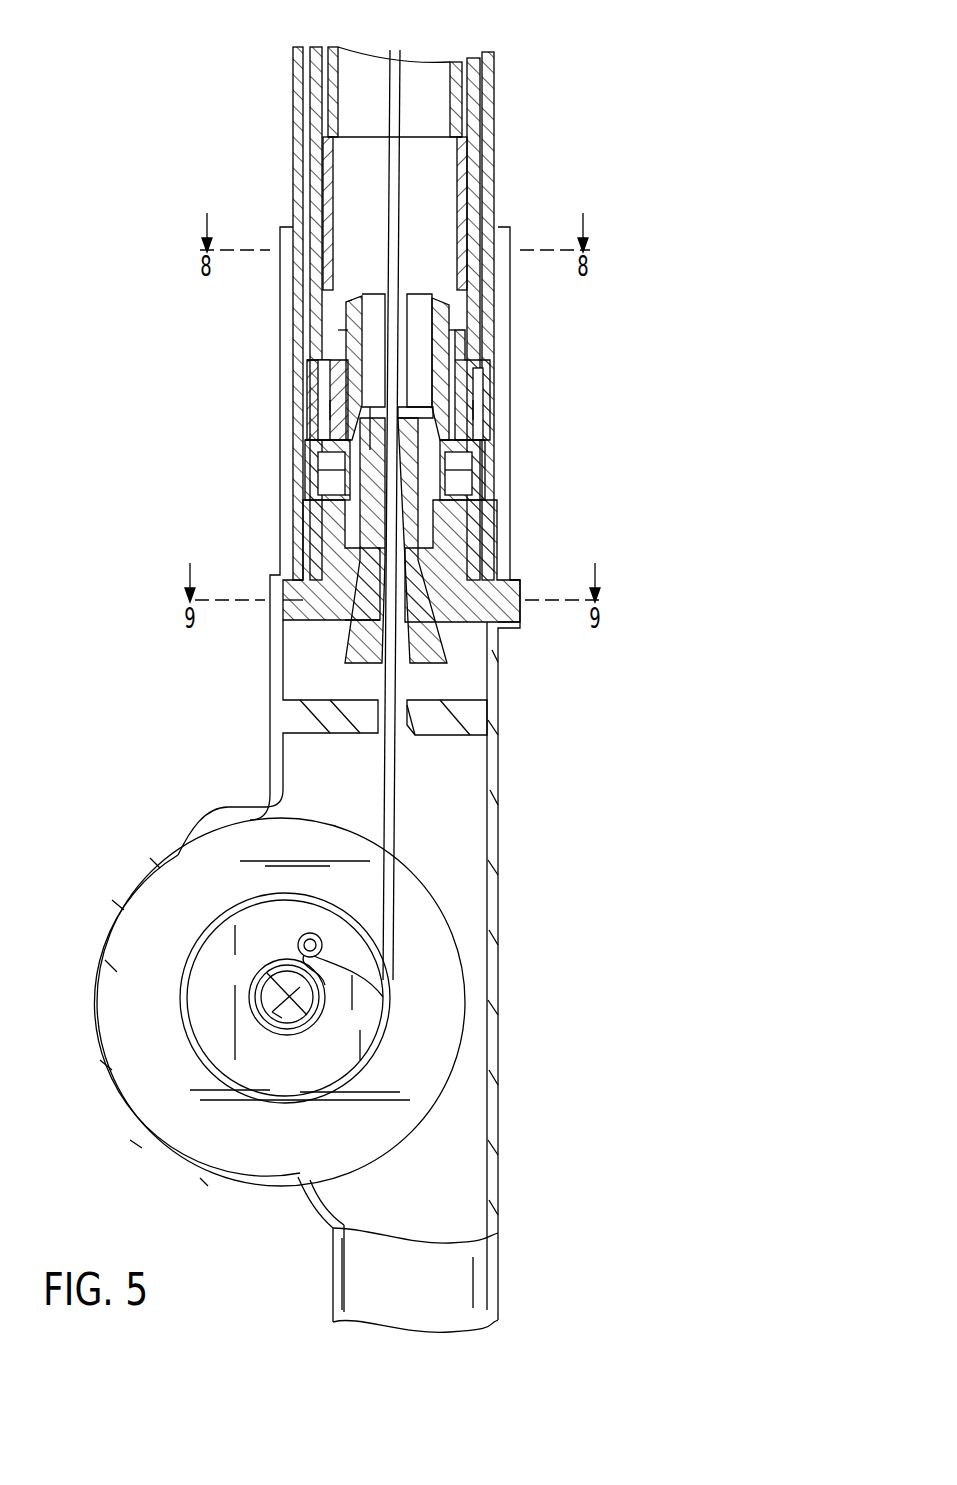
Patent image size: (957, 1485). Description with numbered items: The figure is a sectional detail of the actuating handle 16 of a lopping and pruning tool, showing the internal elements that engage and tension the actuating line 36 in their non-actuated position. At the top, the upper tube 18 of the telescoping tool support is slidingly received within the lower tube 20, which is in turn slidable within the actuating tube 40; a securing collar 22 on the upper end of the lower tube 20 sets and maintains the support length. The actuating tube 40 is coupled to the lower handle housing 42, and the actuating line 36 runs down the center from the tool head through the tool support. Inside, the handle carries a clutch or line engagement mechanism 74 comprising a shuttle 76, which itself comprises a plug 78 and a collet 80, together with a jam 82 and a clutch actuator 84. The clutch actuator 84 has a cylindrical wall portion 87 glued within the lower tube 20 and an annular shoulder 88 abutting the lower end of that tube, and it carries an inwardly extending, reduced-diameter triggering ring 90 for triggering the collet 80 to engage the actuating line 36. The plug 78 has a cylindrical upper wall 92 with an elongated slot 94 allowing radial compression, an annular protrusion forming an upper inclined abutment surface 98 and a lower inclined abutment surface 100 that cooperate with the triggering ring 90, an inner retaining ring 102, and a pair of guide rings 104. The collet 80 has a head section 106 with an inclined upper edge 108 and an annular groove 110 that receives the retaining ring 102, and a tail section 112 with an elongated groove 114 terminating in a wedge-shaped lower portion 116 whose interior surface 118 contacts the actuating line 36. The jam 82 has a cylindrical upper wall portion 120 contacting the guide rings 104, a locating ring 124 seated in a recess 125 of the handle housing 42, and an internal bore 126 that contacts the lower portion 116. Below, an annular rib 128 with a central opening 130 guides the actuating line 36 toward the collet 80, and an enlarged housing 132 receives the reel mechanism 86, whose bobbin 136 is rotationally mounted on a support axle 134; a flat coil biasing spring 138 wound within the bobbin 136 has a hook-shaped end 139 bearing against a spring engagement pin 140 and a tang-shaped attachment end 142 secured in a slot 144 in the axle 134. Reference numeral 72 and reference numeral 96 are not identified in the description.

The actuating handle 16 is at (160, 740).
The upper tube 18 is at (462, 72).
The lower tube 20 is at (480, 88).
The securing collar 22 is at (345, 500).
The actuating line 36 is at (398, 62).
The actuating tube 40 is at (496, 118).
The handle housing 42 is at (505, 232).
The tube wall 72 is at (375, 55).
The line engagement mechanism 74 is at (320, 382).
The shuttle 76 is at (325, 432).
The plug 78 is at (325, 456).
The collet 80 is at (320, 472).
The jam 82 is at (320, 515).
The clutch actuator 84 is at (330, 188).
The reel mechanism 86 is at (445, 852).
The cylindrical wall portion 87 is at (463, 188).
The annular shoulder 88 is at (488, 305).
The triggering ring 90 is at (455, 345).
The upper wall 92 is at (455, 380).
The elongated slot 94 is at (420, 298).
The flange 96 is at (345, 340).
The upper inclined abutment surface 98 is at (350, 308).
The lower inclined abutment surface 100 is at (330, 362).
The retaining ring 102 is at (465, 470).
The guide rings 104 is at (470, 456).
The head section 106 is at (470, 432).
The inclined upper edge 108 is at (470, 408).
The annular groove 110 is at (470, 520).
The tail section 112 is at (380, 548).
The elongated groove 114 is at (505, 622).
The lower portion 116 is at (448, 645).
The interior surface 118 is at (400, 660).
The upper wall portion 120 is at (330, 410).
The locating ring 124 is at (305, 600).
The recess 125 is at (520, 600).
The internal bore 126 is at (380, 612).
The annular rib 128 is at (447, 717).
The central opening 130 is at (405, 720).
The enlarged housing 132 is at (195, 842).
The support axle 134 is at (325, 997).
The bobbin 136 is at (430, 922).
The flat coil biasing spring 138 is at (315, 1022).
The hook-shaped end 139 is at (300, 938).
The spring engagement pin 140 is at (290, 995).
The tang-shaped attachment end 142 is at (283, 1028).
The slot 144 is at (255, 990).